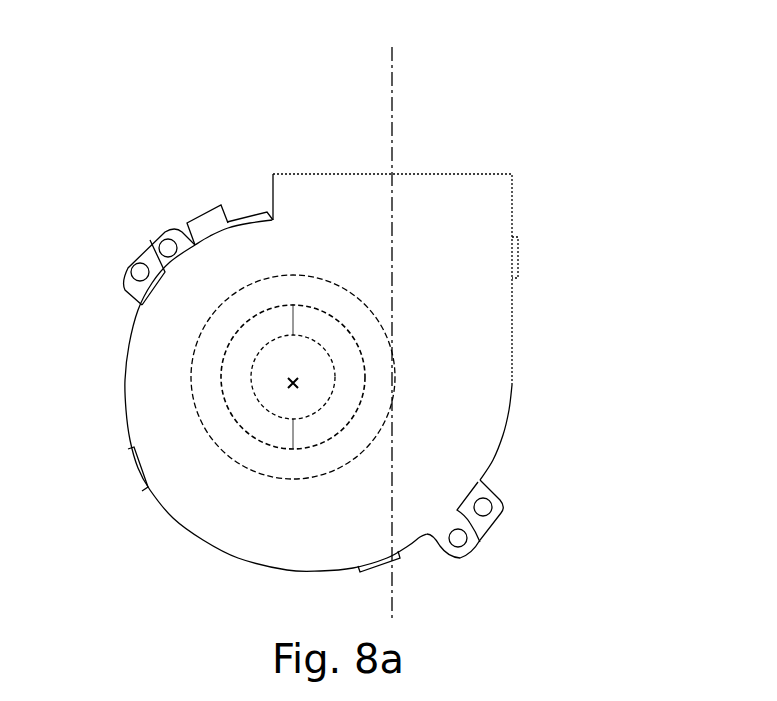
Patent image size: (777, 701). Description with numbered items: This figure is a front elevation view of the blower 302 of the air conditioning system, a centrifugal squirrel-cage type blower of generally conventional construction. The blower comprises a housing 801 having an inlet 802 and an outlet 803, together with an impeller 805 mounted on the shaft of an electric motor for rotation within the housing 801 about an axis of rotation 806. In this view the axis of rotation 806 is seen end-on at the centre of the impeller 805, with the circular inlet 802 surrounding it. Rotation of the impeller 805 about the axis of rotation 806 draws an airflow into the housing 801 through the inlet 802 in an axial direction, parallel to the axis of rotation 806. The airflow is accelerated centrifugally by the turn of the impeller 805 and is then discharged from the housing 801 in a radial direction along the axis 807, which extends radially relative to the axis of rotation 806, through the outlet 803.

The blower 302 is at (600, 89).
The housing 801 is at (475, 318).
The inlet 802 is at (243, 452).
The outlet 803 is at (351, 172).
The impeller 805 is at (248, 403).
The axis of rotation 806 is at (301, 383).
The axis 807 is at (393, 70).